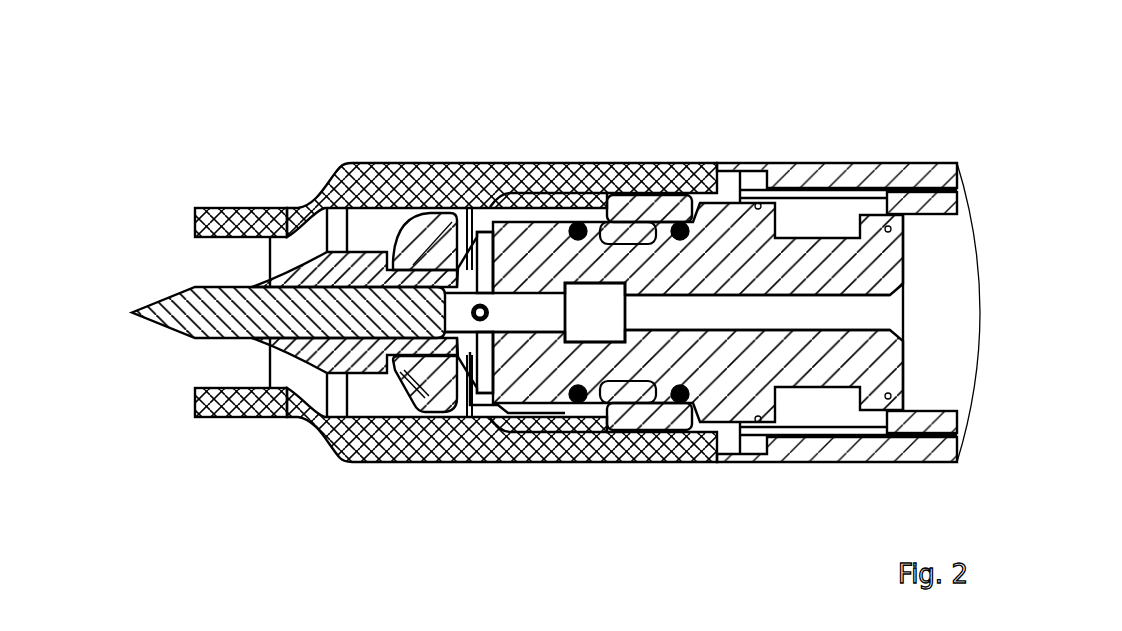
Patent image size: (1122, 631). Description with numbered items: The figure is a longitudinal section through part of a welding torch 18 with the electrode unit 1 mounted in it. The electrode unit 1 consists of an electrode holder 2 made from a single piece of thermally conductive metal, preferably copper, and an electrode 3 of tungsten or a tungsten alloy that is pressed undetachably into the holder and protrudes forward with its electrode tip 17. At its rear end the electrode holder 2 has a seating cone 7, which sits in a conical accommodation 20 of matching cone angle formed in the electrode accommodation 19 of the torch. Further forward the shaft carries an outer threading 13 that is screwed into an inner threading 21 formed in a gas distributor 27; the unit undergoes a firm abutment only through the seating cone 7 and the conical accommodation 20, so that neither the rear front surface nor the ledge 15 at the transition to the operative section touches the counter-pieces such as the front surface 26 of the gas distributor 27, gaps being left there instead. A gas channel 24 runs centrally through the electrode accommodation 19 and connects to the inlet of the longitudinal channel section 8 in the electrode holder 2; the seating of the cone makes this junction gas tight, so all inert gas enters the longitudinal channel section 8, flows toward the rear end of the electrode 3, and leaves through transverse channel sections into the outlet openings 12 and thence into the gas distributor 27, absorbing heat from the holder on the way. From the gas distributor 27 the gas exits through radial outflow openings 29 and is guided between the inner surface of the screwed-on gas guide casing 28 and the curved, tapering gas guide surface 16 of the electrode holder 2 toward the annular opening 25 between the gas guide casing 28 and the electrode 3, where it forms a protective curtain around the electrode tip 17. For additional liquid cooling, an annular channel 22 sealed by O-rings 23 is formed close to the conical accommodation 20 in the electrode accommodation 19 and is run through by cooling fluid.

The electrode unit 1 is at (317, 236).
The electrode holder 2 is at (392, 224).
The electrode 3 is at (227, 276).
The seating cone 7 is at (519, 300).
The longitudinal channel section 8 is at (528, 270).
The outlet openings 12 is at (453, 357).
The outer threading 13 is at (440, 240).
The ledge 15 is at (337, 172).
The gas guide surface 16 is at (297, 352).
The electrode tip 17 is at (131, 310).
The welding torch 18 is at (896, 146).
The electrode accommodation 19 is at (592, 268).
The conical accommodation 20 is at (570, 270).
The inner threading 21 is at (408, 357).
The annular channel 22 is at (645, 233).
The O-rings 23 is at (683, 223).
The gas channel 24 is at (757, 310).
The opening 25 is at (194, 270).
The front surface 26 is at (392, 355).
The gas distributor 27 is at (428, 357).
The gas guide casing 28 is at (505, 355).
The radial outflow openings 29 is at (480, 357).